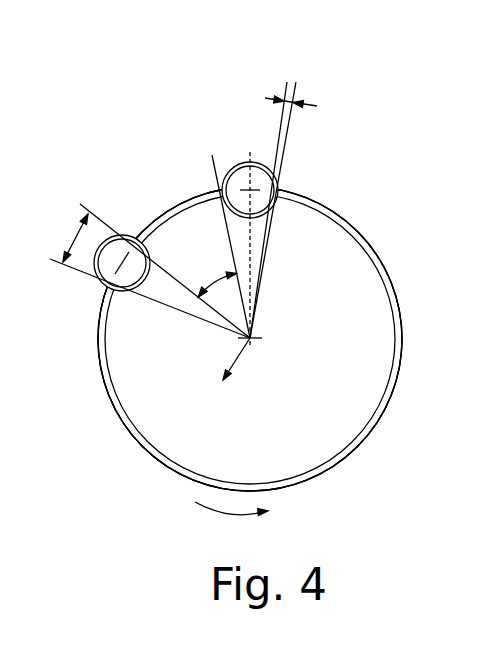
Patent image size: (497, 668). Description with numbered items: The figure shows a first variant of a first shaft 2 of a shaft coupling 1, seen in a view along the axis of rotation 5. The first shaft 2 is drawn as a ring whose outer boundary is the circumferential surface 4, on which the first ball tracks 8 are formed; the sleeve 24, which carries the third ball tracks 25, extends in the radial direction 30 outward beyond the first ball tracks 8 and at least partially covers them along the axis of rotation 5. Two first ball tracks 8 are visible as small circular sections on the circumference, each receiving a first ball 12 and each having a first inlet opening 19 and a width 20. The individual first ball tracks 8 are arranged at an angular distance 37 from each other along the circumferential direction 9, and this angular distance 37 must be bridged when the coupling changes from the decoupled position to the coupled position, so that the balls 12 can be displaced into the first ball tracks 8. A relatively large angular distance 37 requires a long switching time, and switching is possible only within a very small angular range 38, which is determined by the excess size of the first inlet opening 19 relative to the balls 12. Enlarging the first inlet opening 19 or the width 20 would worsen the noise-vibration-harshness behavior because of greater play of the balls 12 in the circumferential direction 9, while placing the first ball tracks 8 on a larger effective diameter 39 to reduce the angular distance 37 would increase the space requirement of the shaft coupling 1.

The shaft coupling 1 is at (413, 151).
The first shaft 2 is at (355, 292).
The circumferential surface 4 is at (128, 425).
The axis of rotation 5 is at (252, 340).
The first ball track 8 is at (227, 183).
The circumferential direction 9 is at (231, 523).
The first ball 12 is at (238, 187).
The first inlet opening 19 is at (103, 285).
The width 20 is at (74, 240).
The sleeve 24 is at (336, 210).
The third ball track 25 is at (266, 178).
The radial direction 30 is at (219, 363).
The angular distance 37 is at (221, 246).
The angular range 38 is at (290, 90).
The effective diameter 39 is at (255, 292).